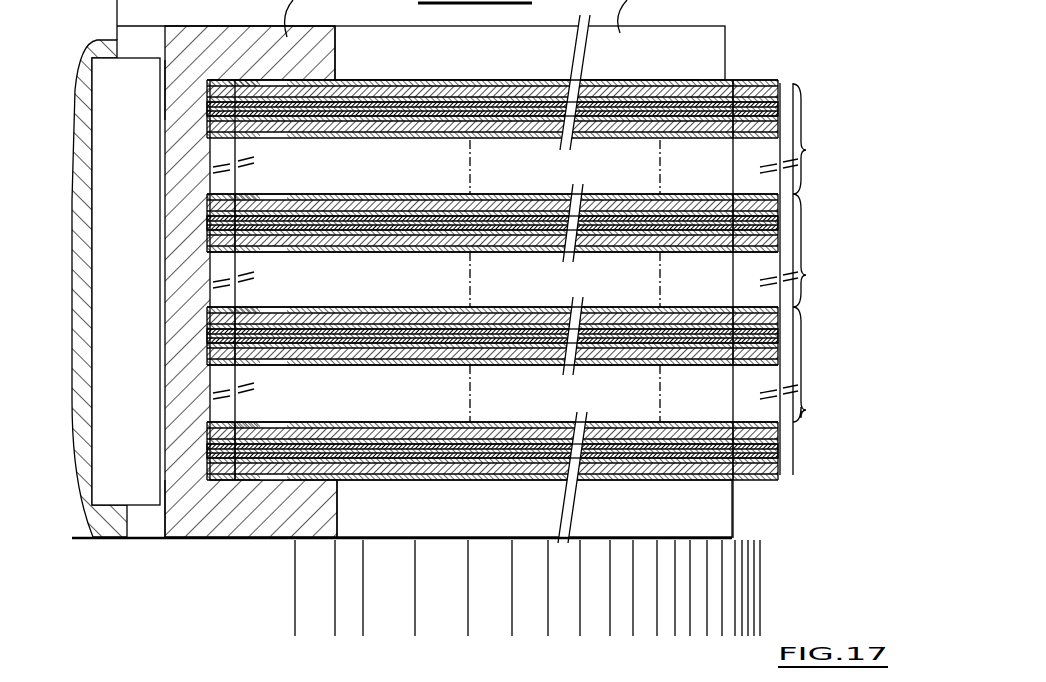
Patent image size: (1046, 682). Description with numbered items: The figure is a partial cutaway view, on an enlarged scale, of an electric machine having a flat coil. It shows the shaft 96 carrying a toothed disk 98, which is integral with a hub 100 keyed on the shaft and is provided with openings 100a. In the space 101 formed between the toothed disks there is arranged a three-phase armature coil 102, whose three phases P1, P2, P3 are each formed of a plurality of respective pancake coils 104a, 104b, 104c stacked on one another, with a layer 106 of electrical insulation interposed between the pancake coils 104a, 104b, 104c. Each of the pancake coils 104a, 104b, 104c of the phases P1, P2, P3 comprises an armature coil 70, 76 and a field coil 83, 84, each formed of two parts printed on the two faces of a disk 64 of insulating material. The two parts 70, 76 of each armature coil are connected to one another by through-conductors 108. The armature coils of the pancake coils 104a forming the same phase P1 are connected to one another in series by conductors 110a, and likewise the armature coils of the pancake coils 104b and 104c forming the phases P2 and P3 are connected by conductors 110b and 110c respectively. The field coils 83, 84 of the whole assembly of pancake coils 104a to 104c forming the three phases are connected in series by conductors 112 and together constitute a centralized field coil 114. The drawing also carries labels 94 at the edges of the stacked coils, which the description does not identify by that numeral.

The disk of insulating material 64 is at (436, 80).
The armature coil part 70 is at (672, 80).
The armature coil part 76 is at (645, 80).
The field coil part 83 is at (290, 32).
The field coil part 84 is at (177, 110).
The electrode tabs 94 is at (210, 94).
The shaft 96 is at (100, 42).
The toothed disk 98 is at (233, 540).
The hub 100 is at (177, 395).
The openings 100a is at (727, 513).
The space 101 is at (222, 185).
The three-phase armature coil 102 is at (772, 68).
The pancake coil 104a is at (778, 81).
The pancake coil 104b is at (778, 253).
The pancake coil 104c is at (778, 366).
The layer of electrical insulation 106 is at (778, 109).
The through-conductors 108 is at (733, 80).
The conductors 110a is at (780, 183).
The conductors 110b is at (780, 296).
The conductors 110c is at (780, 413).
The conductors 112 is at (237, 150).
The centralized field coil 114 is at (262, 298).
The first phase P1 is at (810, 139).
The second phase P2 is at (810, 250).
The third phase P3 is at (810, 364).